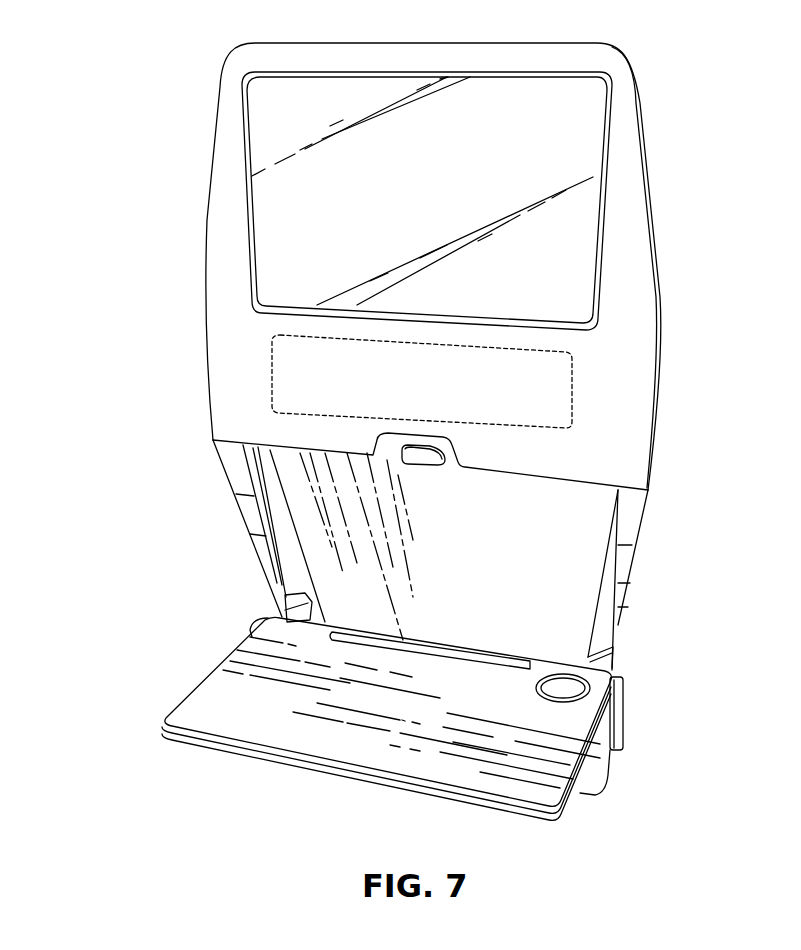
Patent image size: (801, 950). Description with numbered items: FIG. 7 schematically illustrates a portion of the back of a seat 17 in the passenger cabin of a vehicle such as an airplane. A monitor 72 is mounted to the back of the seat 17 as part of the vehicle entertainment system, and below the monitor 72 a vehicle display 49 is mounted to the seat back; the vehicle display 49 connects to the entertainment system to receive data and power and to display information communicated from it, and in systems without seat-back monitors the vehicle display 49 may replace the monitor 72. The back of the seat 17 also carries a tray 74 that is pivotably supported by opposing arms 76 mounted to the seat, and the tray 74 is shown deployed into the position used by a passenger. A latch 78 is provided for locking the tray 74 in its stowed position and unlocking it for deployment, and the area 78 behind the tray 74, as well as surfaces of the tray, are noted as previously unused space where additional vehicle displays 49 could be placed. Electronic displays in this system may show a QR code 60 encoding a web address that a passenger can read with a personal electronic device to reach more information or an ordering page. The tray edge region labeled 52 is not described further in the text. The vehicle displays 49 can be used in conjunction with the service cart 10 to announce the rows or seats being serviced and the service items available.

The cart 10 is at (153, 745).
The seat 17 is at (658, 250).
The vehicle display 49 is at (553, 383).
The tray table 52 is at (574, 808).
The QR code 60 is at (427, 465).
The monitor 72 is at (406, 181).
The tray 74 is at (205, 690).
The arms 76 is at (252, 620).
The latch 78 is at (599, 585).